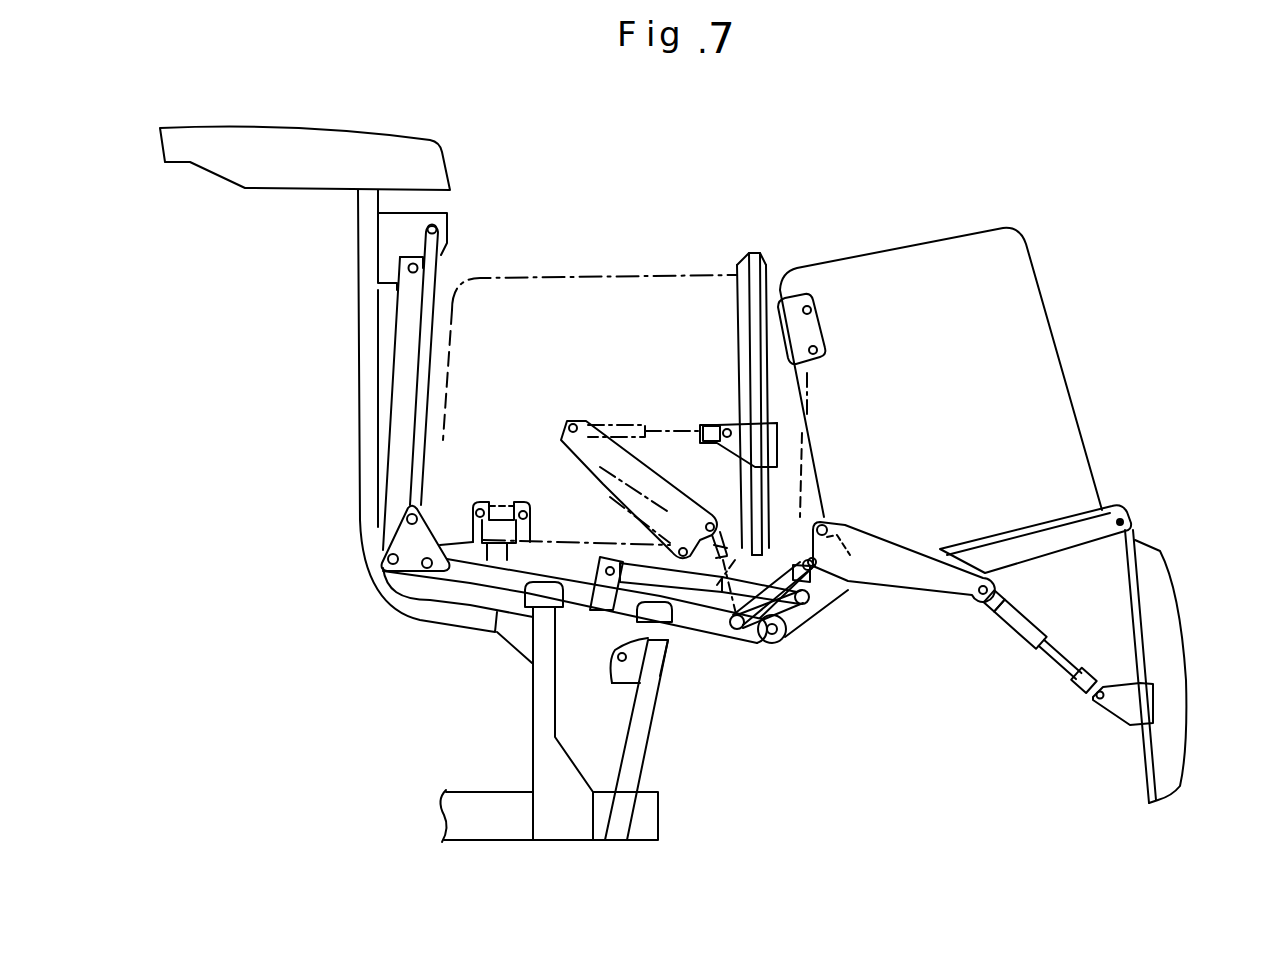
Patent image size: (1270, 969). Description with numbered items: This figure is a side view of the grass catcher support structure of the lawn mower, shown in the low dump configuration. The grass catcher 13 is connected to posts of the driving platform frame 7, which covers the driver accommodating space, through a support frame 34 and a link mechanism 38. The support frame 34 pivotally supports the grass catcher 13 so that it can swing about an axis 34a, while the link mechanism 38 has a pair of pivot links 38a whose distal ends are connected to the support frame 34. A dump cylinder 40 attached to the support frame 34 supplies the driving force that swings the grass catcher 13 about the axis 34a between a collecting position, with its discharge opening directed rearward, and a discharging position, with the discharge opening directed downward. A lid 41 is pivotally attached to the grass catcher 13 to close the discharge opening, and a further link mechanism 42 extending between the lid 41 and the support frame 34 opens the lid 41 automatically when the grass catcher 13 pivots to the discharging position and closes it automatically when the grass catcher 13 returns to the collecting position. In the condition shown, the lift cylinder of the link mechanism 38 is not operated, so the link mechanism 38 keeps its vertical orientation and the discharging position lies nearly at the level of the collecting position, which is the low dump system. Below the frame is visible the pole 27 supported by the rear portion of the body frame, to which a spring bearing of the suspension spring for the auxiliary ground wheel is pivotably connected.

The driving platform frame 7 is at (357, 326).
The grass catcher 13 is at (1048, 306).
The pole 27 is at (640, 734).
The support frame 34 is at (703, 616).
The axis 34a is at (777, 636).
The link mechanism 38 is at (437, 374).
The pivot links 38a is at (418, 440).
The dump cylinder 40 is at (657, 573).
The lid 41 is at (1163, 633).
The link mechanism 42 is at (1010, 628).